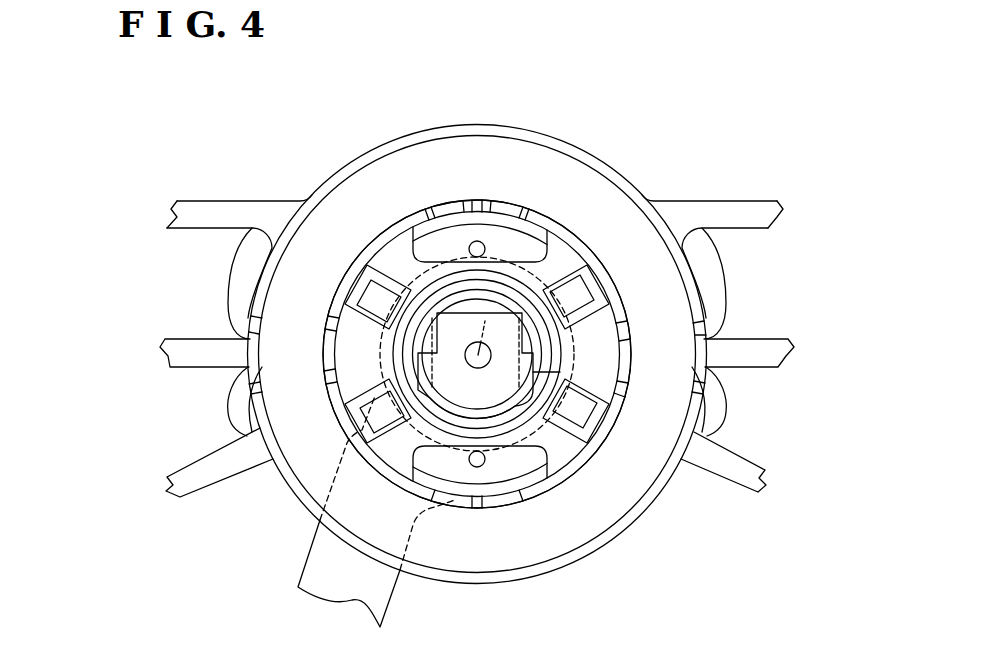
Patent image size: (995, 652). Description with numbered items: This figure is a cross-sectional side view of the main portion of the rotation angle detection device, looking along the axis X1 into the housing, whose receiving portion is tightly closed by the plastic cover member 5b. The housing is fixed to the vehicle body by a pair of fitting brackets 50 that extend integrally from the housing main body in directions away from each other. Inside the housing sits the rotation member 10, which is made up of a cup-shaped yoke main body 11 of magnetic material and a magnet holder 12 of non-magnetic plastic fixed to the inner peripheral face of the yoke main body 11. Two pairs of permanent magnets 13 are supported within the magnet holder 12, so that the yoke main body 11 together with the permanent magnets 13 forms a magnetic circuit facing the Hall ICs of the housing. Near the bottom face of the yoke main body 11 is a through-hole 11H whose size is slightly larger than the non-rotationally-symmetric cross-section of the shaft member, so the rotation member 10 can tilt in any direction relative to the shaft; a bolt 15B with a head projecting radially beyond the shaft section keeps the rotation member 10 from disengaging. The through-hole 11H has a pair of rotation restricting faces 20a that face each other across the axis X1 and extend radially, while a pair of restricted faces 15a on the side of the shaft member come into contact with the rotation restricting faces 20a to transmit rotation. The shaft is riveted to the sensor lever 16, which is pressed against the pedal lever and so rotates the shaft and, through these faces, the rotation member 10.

The cover member 5b is at (330, 176).
The fitting brackets 50 is at (237, 199).
The rotation member 10 is at (537, 203).
The yoke main body 11 is at (350, 427).
The magnet holder 12 is at (417, 222).
The through-hole 11H is at (496, 288).
The permanent magnets 13 is at (560, 290).
The restricted faces 15a is at (393, 253).
The rotation restricting faces 20a is at (452, 313).
The bolt 15B is at (489, 396).
The axis X1 is at (481, 332).
The sensor lever 16 is at (307, 560).